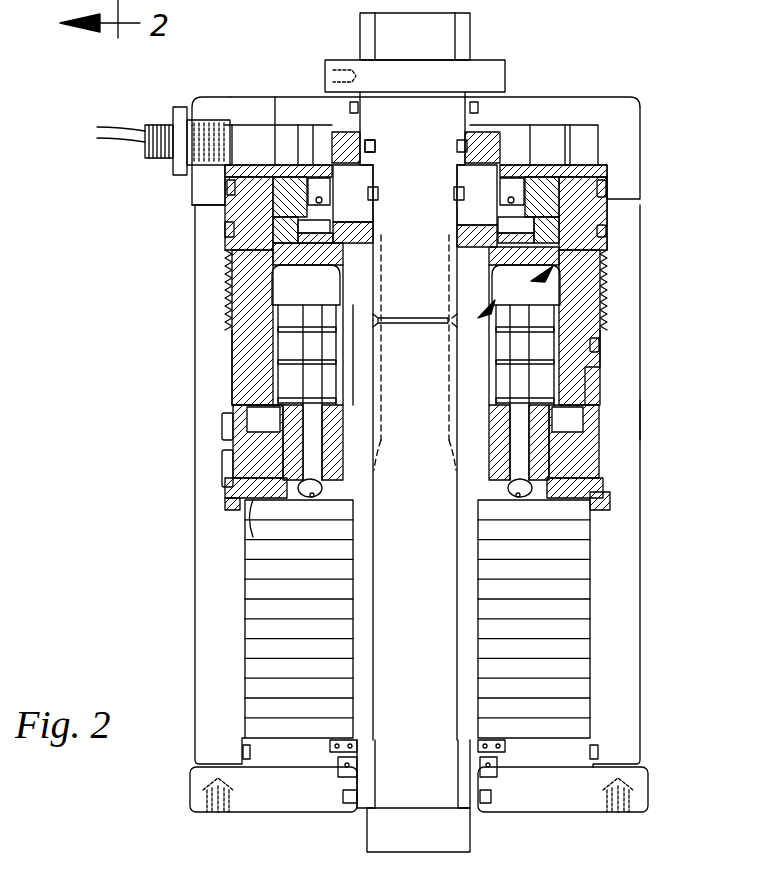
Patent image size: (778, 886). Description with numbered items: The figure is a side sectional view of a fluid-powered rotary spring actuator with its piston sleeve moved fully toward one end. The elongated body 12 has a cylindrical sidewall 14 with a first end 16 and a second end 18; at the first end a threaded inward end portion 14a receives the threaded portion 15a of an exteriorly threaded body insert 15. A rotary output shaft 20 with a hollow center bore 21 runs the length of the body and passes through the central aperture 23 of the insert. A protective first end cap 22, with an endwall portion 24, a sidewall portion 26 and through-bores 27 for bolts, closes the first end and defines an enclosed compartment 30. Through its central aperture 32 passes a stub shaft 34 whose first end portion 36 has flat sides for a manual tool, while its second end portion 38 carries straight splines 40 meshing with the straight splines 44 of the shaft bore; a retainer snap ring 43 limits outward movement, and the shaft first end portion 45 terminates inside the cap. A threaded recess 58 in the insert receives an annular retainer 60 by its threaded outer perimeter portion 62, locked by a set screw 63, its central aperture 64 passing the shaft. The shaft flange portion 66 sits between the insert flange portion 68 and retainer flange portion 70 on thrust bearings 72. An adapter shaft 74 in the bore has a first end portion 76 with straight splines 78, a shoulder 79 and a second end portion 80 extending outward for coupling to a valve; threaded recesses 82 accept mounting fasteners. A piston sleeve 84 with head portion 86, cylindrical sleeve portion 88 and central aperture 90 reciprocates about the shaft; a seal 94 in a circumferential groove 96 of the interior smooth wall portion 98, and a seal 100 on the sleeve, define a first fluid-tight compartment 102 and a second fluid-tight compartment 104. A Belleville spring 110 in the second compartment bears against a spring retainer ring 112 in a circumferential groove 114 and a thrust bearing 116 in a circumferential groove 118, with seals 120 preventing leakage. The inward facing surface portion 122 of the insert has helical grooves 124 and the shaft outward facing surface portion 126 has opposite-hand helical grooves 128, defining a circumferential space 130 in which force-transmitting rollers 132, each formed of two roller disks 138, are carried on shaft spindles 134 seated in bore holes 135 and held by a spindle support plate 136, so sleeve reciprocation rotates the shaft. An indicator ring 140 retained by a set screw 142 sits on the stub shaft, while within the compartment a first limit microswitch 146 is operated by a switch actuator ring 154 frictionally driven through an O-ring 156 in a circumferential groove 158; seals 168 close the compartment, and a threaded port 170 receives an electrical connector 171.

The body 12 is at (641, 452).
The cylindrical sidewall 14 is at (197, 583).
The threaded inward end portion 14a is at (227, 292).
The body insert 15 is at (264, 287).
The threaded portion 15a is at (227, 314).
The first end 16 is at (215, 204).
The second end 18 is at (217, 768).
The rotary output shaft 20 is at (372, 602).
The hollow center bore 21 is at (378, 778).
The first end cap 22 is at (553, 96).
The central aperture 23 is at (338, 276).
The endwall portion 24 is at (588, 107).
The sidewall portion 26 is at (641, 134).
The through-bores 27 is at (212, 62).
The protective enclosed compartment 30 is at (288, 128).
The central aperture 32 is at (462, 113).
The stub shaft 34 is at (440, 279).
The first end portion 36 is at (360, 33).
The second end portion 38 is at (397, 314).
The straight splines 40 is at (455, 245).
The retainer snap ring 43 is at (462, 127).
The straight splines 44 is at (354, 352).
The first end portion 45 is at (374, 205).
The interiorly threaded recess 58 is at (270, 148).
The annular retainer 60 is at (245, 250).
The threaded outer perimeter portion 62 is at (324, 200).
The set screw 63 is at (230, 214).
The central aperture 64 is at (497, 212).
The flange portion 66 is at (585, 200).
The flange portion 68 is at (500, 251).
The flange portion 70 is at (322, 232).
The thrust bearings 72 is at (497, 228).
The adapter shaft 74 is at (414, 681).
The first end portion 76 is at (560, 408).
The straight splines 78 is at (385, 396).
The shoulder 79 is at (367, 815).
The second end portion 80 is at (455, 826).
The threaded recesses 82 is at (222, 816).
The piston sleeve 84 is at (280, 464).
The head portion 86 is at (225, 470).
The cylindrical sleeve portion 88 is at (343, 440).
The central aperture 90 is at (322, 478).
The seal 94 is at (226, 462).
The circumferential groove 96 is at (641, 420).
The interior smooth wall portion 98 is at (595, 375).
The seal 100 is at (345, 470).
The first fluid-tight compartment 102 is at (221, 428).
The second fluid-tight compartment 104 is at (225, 495).
The spring 110 is at (567, 638).
The spring retainer ring 112 is at (610, 508).
The circumferential groove 114 is at (248, 545).
The thrust bearing 116 is at (343, 760).
The circumferential groove 118 is at (332, 744).
The seals 120 is at (606, 188).
The inward facing surface portion 122 is at (603, 328).
The helical grooves 124 is at (275, 325).
The outward facing surface portion 126 is at (362, 300).
The helical grooves 128 is at (485, 322).
The circumferential space 130 is at (605, 270).
The force-transmitting rollers 132 is at (482, 308).
The shaft spindles 134 is at (520, 420).
The bore holes 135 is at (600, 480).
The spindle support plate 136 is at (606, 282).
The roller disks 138 is at (240, 400).
The indicator ring 140 is at (507, 74).
The set screw 142 is at (338, 72).
The first limit microswitch 146 is at (297, 140).
The switch actuator ring 154 is at (362, 165).
The O-ring 156 is at (376, 146).
The circumferential groove 158 is at (368, 143).
The seals 168 is at (358, 105).
The threaded port 170 is at (228, 112).
The electrical connector 171 is at (158, 126).